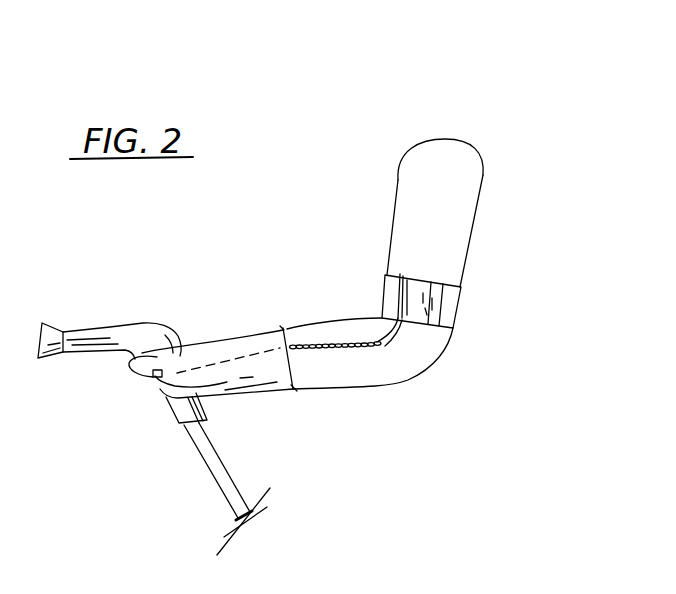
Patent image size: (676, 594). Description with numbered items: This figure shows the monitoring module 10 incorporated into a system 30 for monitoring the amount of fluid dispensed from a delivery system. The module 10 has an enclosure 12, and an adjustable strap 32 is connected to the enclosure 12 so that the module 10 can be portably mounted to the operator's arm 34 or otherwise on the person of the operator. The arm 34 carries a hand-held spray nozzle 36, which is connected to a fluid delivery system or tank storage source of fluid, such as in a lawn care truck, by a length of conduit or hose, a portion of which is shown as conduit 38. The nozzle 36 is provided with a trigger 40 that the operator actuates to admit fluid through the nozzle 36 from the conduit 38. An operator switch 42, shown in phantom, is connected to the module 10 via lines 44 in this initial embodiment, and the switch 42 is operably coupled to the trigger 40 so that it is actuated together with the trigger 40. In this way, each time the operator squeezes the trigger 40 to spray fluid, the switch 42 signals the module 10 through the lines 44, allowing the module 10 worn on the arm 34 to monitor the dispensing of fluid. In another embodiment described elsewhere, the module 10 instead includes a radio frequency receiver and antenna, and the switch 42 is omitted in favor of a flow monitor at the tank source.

The system 30 is at (575, 93).
The arm 34 is at (462, 195).
The adjustable strap 32 is at (450, 313).
The enclosure 12 is at (445, 300).
The module 10 is at (415, 292).
The lines 44 is at (342, 348).
The spray nozzle 36 is at (135, 332).
The operator switch 42 is at (157, 370).
The trigger 40 is at (143, 382).
The conduit 38 is at (220, 483).